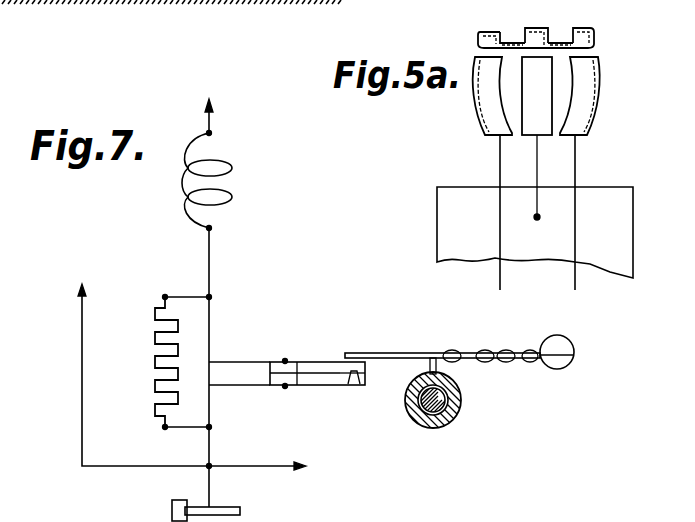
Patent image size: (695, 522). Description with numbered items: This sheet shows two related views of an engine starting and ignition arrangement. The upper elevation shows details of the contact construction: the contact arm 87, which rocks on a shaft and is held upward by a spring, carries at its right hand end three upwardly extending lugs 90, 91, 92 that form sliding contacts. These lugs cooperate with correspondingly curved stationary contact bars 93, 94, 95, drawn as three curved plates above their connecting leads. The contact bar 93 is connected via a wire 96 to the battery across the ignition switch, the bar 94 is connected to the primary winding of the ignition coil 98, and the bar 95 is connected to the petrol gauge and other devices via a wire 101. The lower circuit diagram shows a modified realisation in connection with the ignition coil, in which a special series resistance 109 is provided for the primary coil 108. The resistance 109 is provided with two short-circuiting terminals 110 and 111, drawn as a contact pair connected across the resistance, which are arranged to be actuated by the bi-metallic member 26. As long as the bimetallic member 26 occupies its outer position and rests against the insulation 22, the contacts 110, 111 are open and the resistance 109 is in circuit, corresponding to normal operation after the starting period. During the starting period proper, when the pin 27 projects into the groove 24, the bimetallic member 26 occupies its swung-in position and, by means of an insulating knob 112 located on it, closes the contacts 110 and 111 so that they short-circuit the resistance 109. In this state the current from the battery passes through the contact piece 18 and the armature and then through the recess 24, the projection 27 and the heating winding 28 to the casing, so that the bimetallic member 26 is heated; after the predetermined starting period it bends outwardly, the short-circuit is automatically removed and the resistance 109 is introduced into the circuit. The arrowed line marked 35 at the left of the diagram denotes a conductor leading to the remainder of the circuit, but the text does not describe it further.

In FIG. 5A, the contact arm 87 is at (508, 47).
In FIG. 5A, the lug 90 is at (586, 31).
In FIG. 5A, the lug 91 is at (540, 34).
In FIG. 5A, the lug 92 is at (482, 35).
In FIG. 5A, the contact bar 93 is at (585, 100).
In FIG. 5A, the contact bar 94 is at (537, 137).
In FIG. 5A, the contact bar 95 is at (488, 108).
In FIG. 5A, the wire 96 is at (577, 227).
In FIG. 5A, the ignition coil 98 is at (577, 170).
In FIG. 5A, the wire 101 is at (500, 227).
In FIG. 7, the contact piece 18 is at (178, 500).
In FIG. 7, the insulation 22 is at (459, 411).
In FIG. 7, the opening 24 is at (448, 386).
In FIG. 7, the bi-metallic member 26 is at (508, 352).
In FIG. 7, the projection 27 is at (428, 370).
In FIG. 7, the heating winding 28 is at (485, 350).
In FIG. 7, the conductor 35 is at (80, 332).
In FIG. 7, the primary coil 108 is at (233, 168).
In FIG. 7, the series resistance 109 is at (155, 332).
In FIG. 7, the short-circuiting terminal 110 is at (307, 362).
In FIG. 7, the short-circuiting terminal 111 is at (337, 386).
In FIG. 7, the insulating knob 112 is at (352, 352).